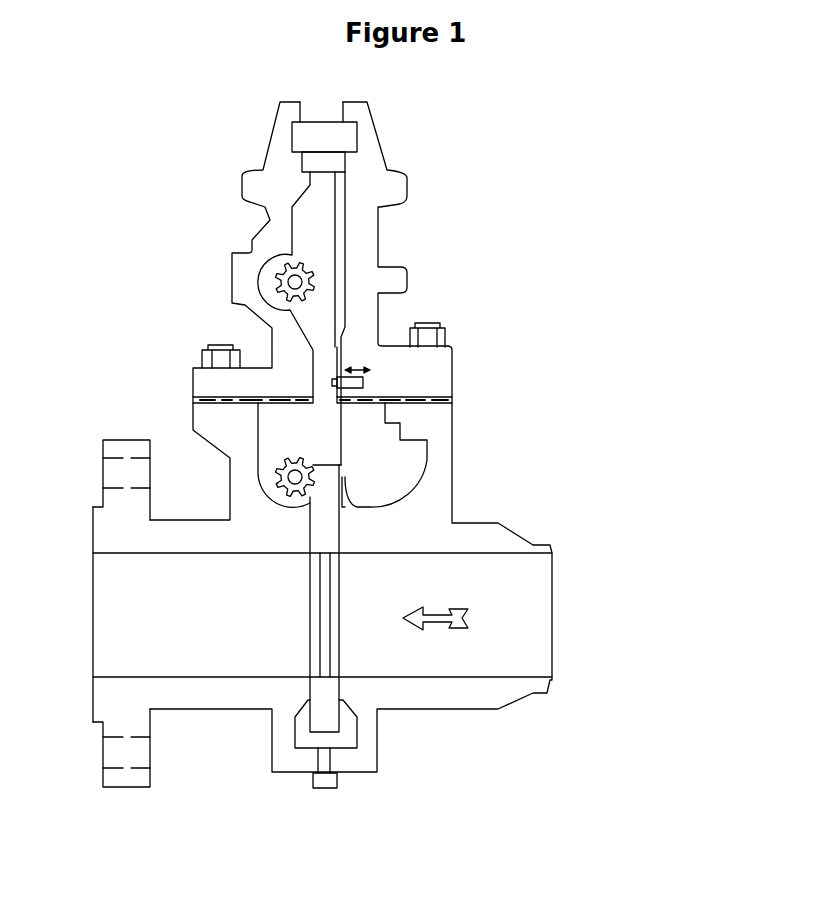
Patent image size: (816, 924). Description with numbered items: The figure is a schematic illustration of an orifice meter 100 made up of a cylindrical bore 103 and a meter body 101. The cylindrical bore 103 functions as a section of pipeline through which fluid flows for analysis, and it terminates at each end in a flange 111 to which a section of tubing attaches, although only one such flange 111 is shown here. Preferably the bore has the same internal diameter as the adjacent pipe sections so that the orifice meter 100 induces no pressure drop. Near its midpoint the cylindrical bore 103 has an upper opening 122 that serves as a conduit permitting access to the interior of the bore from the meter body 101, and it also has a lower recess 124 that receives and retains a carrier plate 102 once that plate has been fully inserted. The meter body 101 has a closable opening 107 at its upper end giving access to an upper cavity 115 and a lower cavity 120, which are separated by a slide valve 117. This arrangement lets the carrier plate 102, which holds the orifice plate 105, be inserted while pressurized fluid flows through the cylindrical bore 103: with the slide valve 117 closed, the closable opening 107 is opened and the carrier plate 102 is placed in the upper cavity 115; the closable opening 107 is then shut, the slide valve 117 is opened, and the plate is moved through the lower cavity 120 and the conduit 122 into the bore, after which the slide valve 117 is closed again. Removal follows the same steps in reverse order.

The orifice meter 100 is at (92, 233).
The meter body 101 is at (440, 493).
The carrier plate 102 is at (342, 667).
The cylindrical bore 103 is at (527, 585).
The orifice plate 105 is at (330, 615).
The closable opening 107 is at (330, 100).
The flange 111 is at (117, 440).
The upper cavity 115 is at (310, 240).
The slide valve 117 is at (363, 383).
The lower cavity 120 is at (363, 453).
The upper opening 122 is at (345, 558).
The lower recess 124 is at (308, 738).